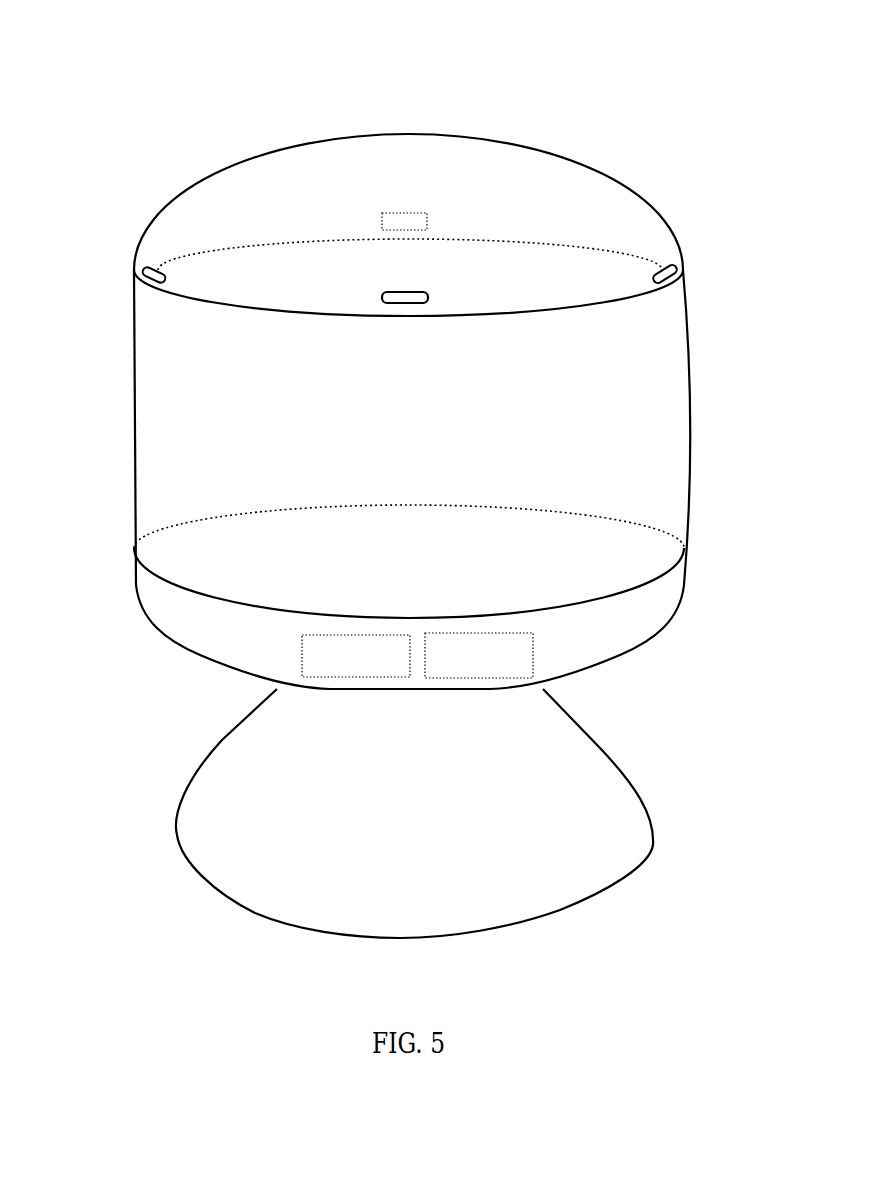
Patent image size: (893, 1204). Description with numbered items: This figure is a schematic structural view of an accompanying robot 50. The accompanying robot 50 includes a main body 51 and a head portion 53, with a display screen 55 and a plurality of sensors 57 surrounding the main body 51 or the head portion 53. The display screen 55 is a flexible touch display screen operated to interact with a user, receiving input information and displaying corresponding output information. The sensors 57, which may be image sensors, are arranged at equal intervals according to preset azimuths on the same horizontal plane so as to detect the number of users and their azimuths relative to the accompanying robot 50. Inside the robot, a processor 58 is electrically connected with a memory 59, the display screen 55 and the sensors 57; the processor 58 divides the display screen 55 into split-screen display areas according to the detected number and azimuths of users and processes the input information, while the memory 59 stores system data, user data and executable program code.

The accompanying robot 50 is at (398, 476).
The main body 51 is at (177, 806).
The head portion 53 is at (135, 573).
The display screen 55 is at (653, 443).
The sensors 57 is at (161, 268).
The processor 58 is at (302, 654).
The memory 59 is at (535, 656).